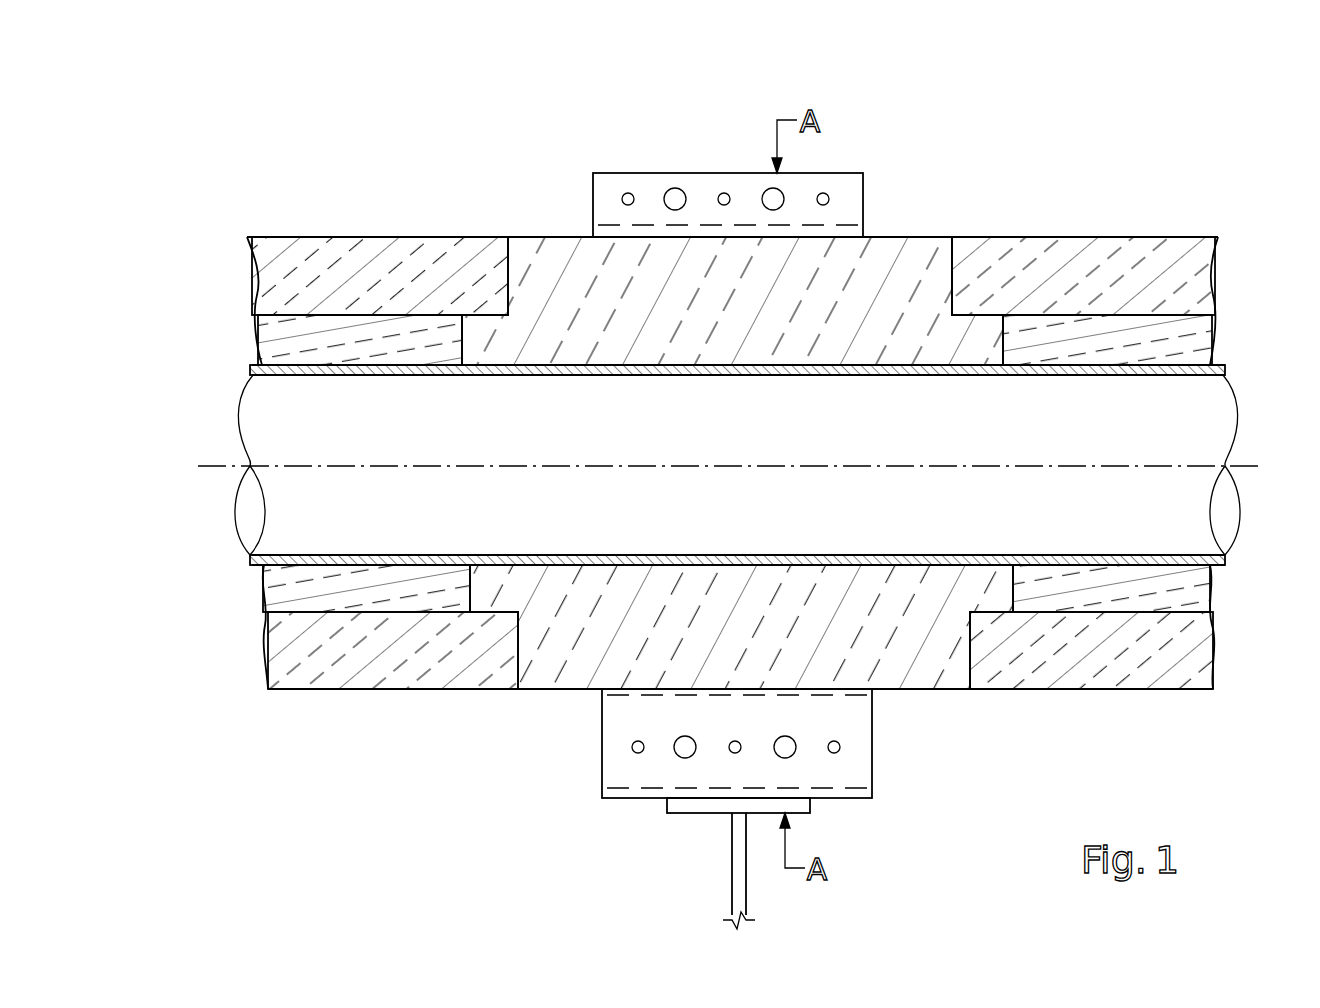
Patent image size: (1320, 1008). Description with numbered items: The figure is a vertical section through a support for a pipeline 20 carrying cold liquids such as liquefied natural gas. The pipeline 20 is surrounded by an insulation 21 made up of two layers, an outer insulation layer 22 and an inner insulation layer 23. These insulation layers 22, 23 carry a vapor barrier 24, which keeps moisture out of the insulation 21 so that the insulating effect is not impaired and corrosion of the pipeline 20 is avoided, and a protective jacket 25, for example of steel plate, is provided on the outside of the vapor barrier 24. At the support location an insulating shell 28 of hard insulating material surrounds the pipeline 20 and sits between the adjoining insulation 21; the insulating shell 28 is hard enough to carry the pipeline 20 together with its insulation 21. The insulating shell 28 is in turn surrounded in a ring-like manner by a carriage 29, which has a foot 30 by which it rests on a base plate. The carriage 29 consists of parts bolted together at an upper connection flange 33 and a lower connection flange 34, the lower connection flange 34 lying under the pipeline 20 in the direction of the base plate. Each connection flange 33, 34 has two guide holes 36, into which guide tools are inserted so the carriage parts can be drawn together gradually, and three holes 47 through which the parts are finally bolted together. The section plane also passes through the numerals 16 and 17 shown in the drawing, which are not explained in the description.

The base plate 16 is at (686, 805).
The shaft 17 is at (732, 890).
The pipeline 20 is at (222, 424).
The insulation 21 is at (248, 290).
The outer insulation layer 22 is at (255, 257).
The inner insulation layer 23 is at (258, 343).
The vapor barrier 24 is at (283, 330).
The protective jacket 25 is at (407, 689).
The insulating shell 28 is at (530, 238).
The carriage 29 is at (586, 158).
The foot 30 is at (888, 792).
The upper connection flange 33 is at (845, 216).
The lower connection flange 34 is at (840, 780).
The guide hole 36 is at (675, 186).
The hole 47 is at (628, 191).